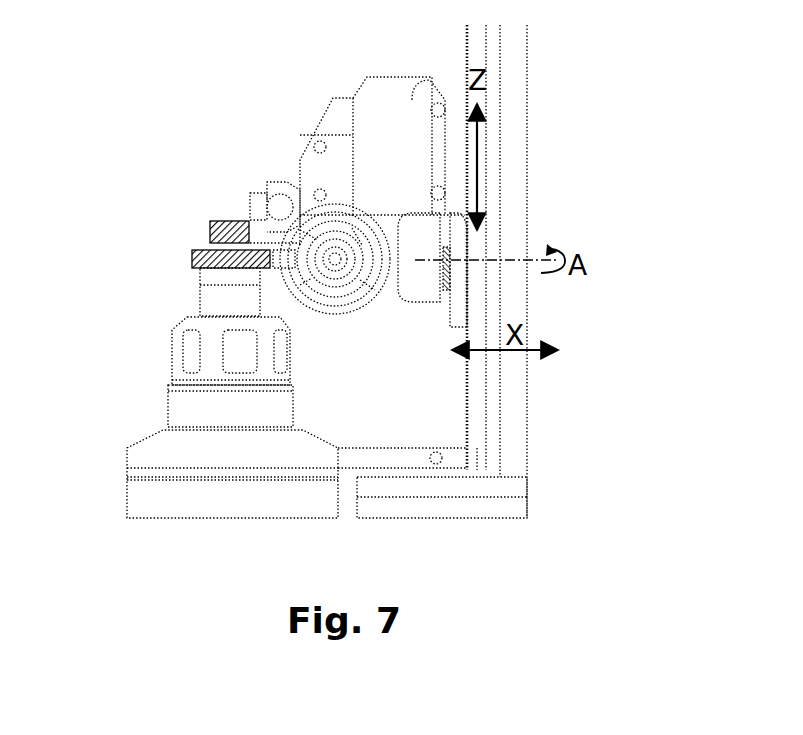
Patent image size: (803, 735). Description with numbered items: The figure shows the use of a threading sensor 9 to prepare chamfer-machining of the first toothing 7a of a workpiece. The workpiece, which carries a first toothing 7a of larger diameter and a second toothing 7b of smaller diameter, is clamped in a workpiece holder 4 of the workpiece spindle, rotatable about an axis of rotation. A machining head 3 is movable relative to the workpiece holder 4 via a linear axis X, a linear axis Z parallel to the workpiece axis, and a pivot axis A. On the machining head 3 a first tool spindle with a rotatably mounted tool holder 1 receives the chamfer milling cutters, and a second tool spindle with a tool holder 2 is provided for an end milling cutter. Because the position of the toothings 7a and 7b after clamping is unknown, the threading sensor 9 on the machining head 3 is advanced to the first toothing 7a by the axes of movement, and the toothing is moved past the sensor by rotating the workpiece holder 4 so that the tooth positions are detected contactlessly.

The tool holder 1 is at (337, 260).
The tool holder 2 is at (243, 210).
The machining head 3 is at (368, 107).
The workpiece holder 4 is at (220, 300).
The first toothing 7a is at (173, 261).
The second toothing 7b is at (198, 231).
The threading sensor 9 is at (277, 262).